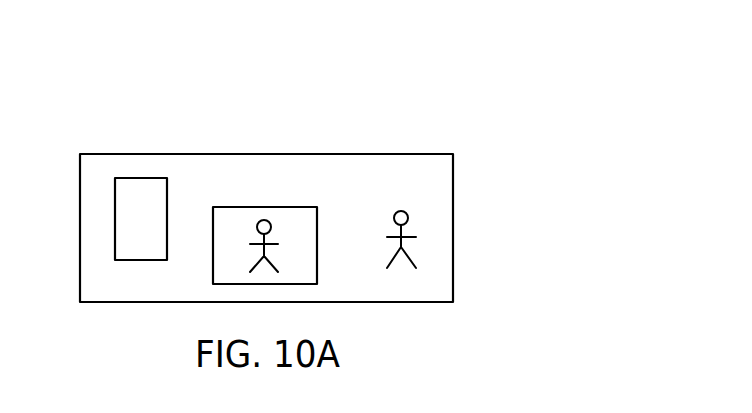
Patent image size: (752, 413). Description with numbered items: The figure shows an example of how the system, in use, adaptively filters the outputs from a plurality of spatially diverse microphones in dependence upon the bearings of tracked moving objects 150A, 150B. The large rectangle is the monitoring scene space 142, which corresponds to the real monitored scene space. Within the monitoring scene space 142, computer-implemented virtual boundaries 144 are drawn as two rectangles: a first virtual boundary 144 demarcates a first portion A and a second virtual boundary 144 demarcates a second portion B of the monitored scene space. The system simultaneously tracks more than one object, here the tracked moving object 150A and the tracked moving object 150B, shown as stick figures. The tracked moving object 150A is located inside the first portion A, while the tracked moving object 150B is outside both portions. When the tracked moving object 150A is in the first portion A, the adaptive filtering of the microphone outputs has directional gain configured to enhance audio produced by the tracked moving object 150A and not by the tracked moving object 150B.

The monitoring scene space 142 is at (430, 154).
The computer-implemented virtual boundary 144 is at (128, 178).
The tracked moving object 150A is at (265, 219).
The tracked moving object 150B is at (403, 238).